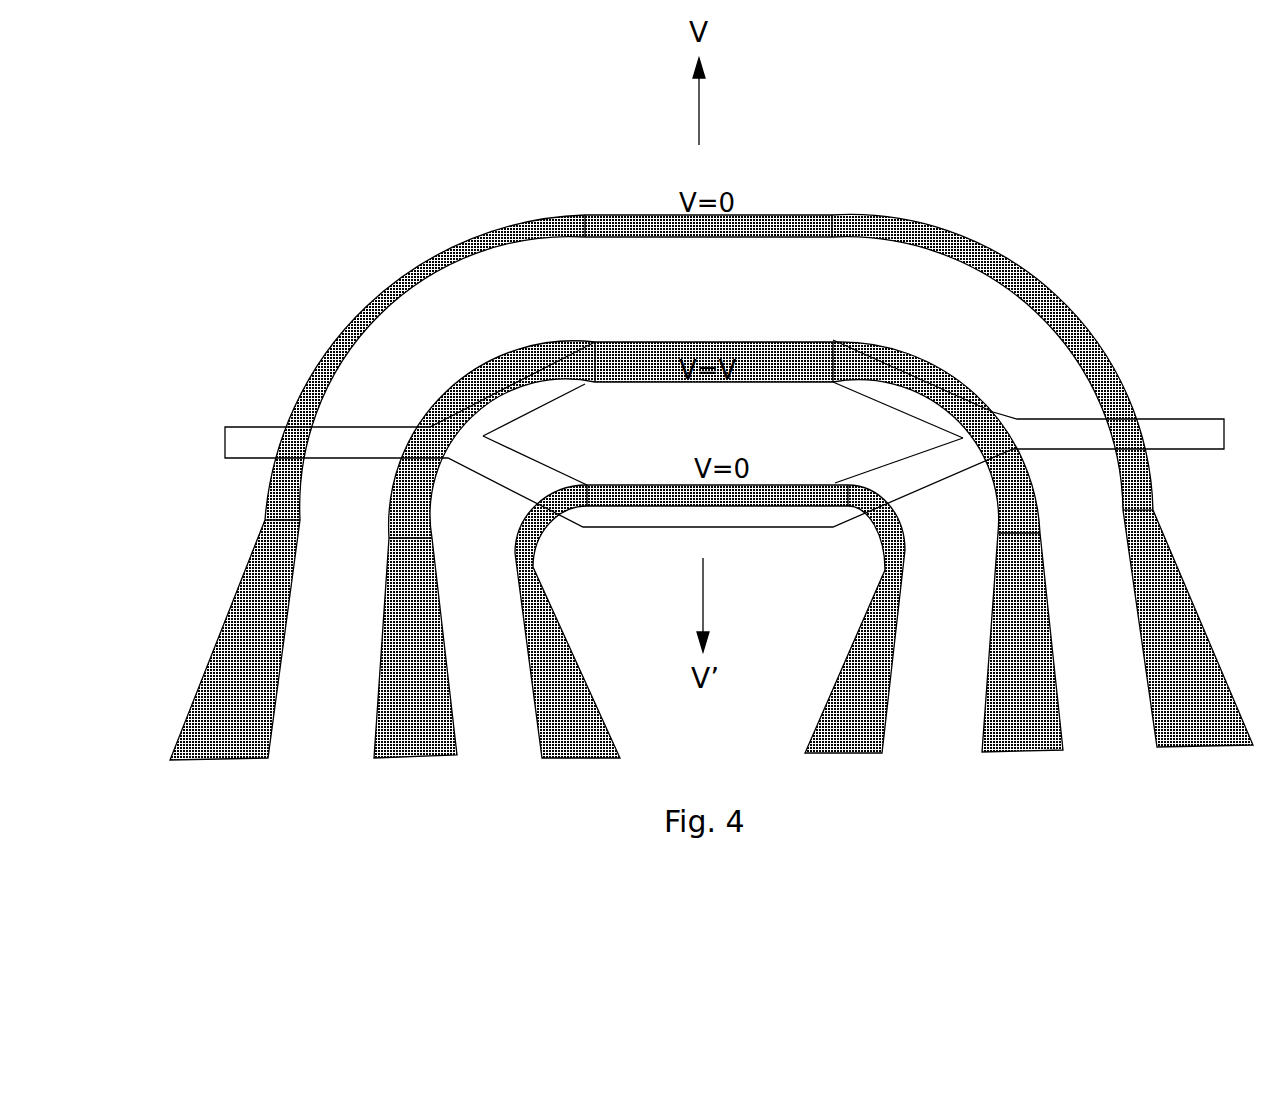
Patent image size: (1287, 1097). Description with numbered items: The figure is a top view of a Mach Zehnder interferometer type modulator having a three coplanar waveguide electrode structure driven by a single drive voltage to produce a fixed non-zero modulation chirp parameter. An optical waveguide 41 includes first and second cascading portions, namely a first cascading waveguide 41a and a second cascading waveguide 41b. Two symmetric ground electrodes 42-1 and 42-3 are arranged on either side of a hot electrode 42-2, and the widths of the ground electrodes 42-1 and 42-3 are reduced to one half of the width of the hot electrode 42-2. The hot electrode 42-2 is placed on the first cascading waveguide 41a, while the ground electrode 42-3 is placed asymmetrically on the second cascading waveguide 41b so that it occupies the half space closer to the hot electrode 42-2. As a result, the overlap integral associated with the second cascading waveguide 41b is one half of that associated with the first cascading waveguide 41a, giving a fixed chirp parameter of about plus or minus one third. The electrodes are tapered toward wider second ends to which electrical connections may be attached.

The optical waveguide 41 is at (237, 447).
The first cascading waveguide 41a is at (527, 405).
The second cascading waveguide 41b is at (517, 477).
The ground electrode 42-1 is at (783, 230).
The hot electrode 42-2 is at (787, 360).
The ground electrode 42-3 is at (785, 492).